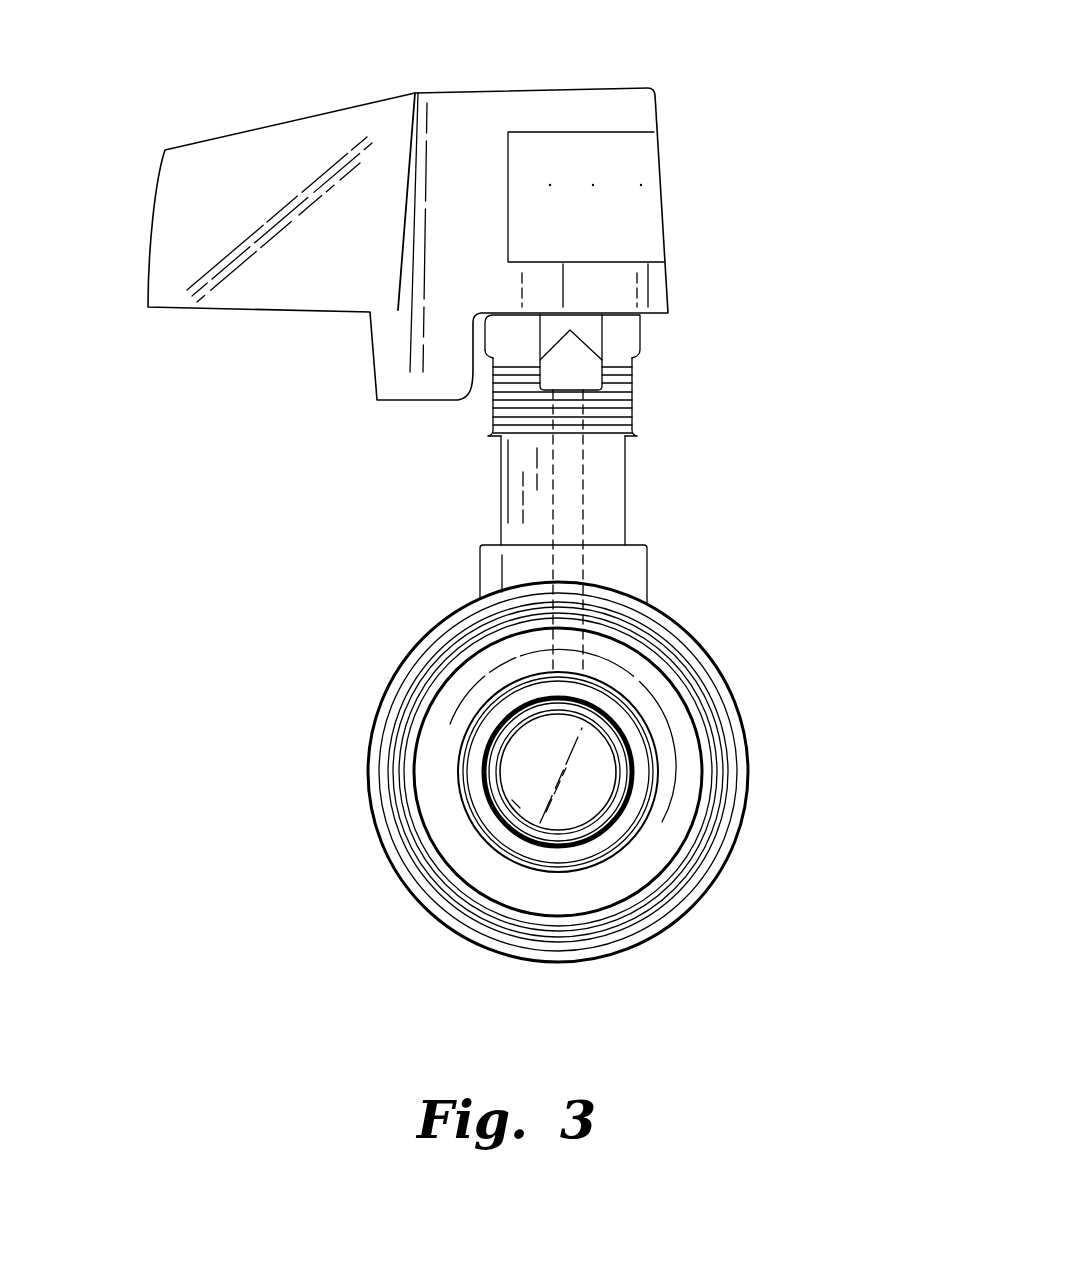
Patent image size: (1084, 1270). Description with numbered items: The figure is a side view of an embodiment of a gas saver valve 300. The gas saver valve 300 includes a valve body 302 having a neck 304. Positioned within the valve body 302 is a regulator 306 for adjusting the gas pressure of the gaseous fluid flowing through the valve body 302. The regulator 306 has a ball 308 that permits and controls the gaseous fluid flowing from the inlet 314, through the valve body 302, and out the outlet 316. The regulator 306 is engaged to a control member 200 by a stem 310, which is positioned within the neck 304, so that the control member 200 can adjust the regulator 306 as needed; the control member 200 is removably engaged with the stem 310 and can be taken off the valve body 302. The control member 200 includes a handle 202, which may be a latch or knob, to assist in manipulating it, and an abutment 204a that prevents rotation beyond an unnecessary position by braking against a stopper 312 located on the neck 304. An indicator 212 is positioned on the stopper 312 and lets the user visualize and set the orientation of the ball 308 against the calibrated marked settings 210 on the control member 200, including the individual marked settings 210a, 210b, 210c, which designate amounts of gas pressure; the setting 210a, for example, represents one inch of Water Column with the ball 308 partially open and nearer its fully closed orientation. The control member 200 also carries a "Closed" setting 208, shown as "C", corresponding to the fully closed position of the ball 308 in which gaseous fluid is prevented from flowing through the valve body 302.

The gas saver valve 300 is at (160, 73).
The control member 200 is at (497, 107).
The handle 202 is at (163, 245).
The abutment 204a is at (483, 418).
The "Closed" setting 208 is at (522, 158).
The calibrated marked settings 210 is at (615, 153).
The marked setting 210a is at (553, 222).
The marked setting 210b is at (598, 221).
The marked setting 210c is at (651, 218).
The indicator 212 is at (577, 377).
The valve body 302 is at (748, 700).
The neck 304 is at (642, 522).
The regulator 306 is at (673, 586).
The ball 308 is at (587, 793).
The stem 310 is at (553, 523).
The stopper 312 is at (603, 330).
The inlet 314 is at (463, 853).
The outlet 316 is at (338, 748).